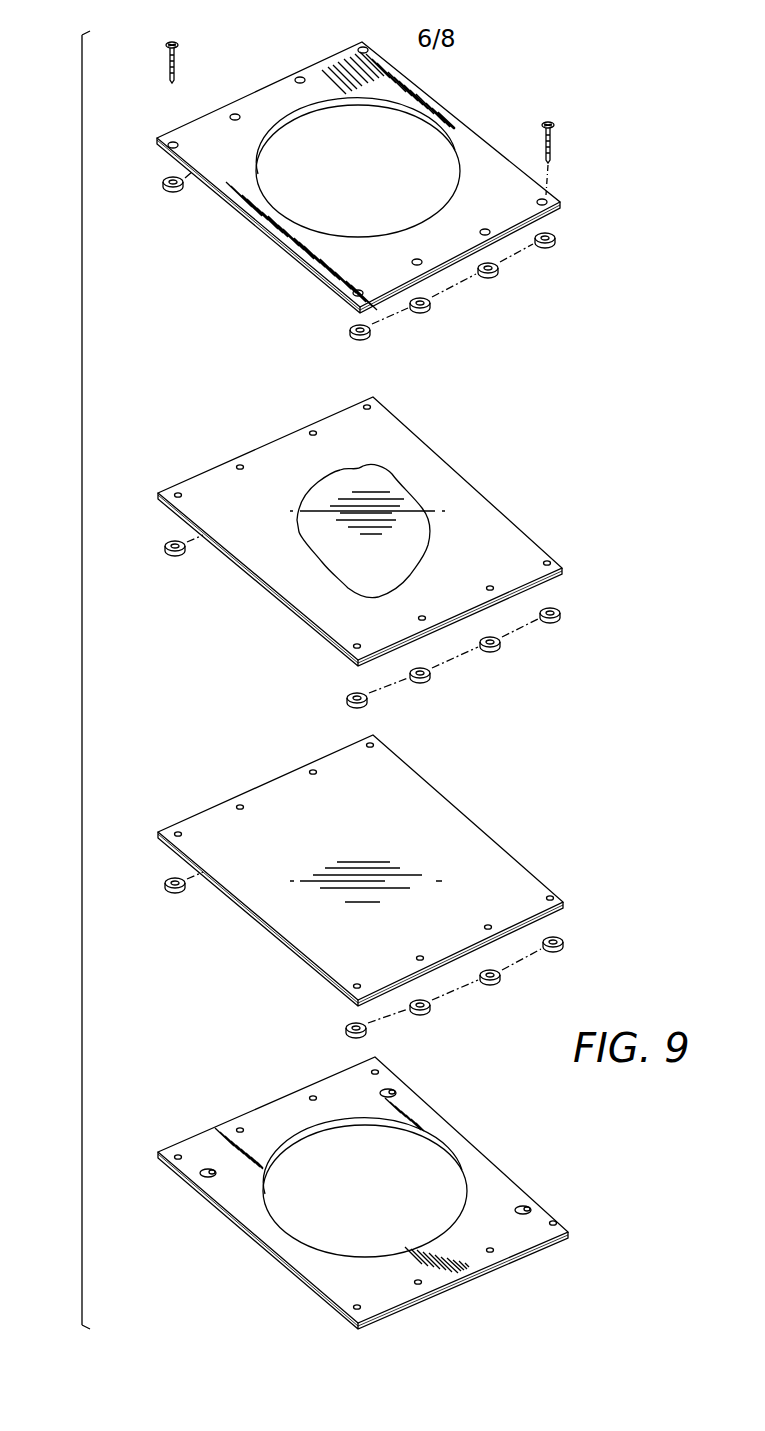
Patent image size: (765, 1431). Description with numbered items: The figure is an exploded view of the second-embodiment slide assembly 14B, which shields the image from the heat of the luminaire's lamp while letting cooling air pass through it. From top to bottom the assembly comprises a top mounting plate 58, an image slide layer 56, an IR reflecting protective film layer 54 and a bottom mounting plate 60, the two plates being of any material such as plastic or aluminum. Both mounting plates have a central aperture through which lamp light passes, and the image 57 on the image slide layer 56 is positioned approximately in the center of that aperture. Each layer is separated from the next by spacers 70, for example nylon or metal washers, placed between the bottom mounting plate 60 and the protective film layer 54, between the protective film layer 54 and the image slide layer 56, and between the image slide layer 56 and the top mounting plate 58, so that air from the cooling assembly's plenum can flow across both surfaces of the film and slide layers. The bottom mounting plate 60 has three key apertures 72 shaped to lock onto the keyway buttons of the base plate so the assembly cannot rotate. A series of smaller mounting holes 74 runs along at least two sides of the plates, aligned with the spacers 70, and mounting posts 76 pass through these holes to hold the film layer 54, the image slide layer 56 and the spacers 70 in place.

The slide assembly 14B is at (82, 668).
The IR reflecting protective film layer 54 is at (463, 855).
The image slide layer 56 is at (493, 527).
The image 57 is at (413, 497).
The top mounting plate 58 is at (475, 150).
The bottom mounting plate 60 is at (500, 1183).
The spacers 70 is at (492, 272).
The key apertures 72 is at (207, 1168).
The mounting holes 74 is at (302, 77).
The mounting posts 76 is at (555, 148).